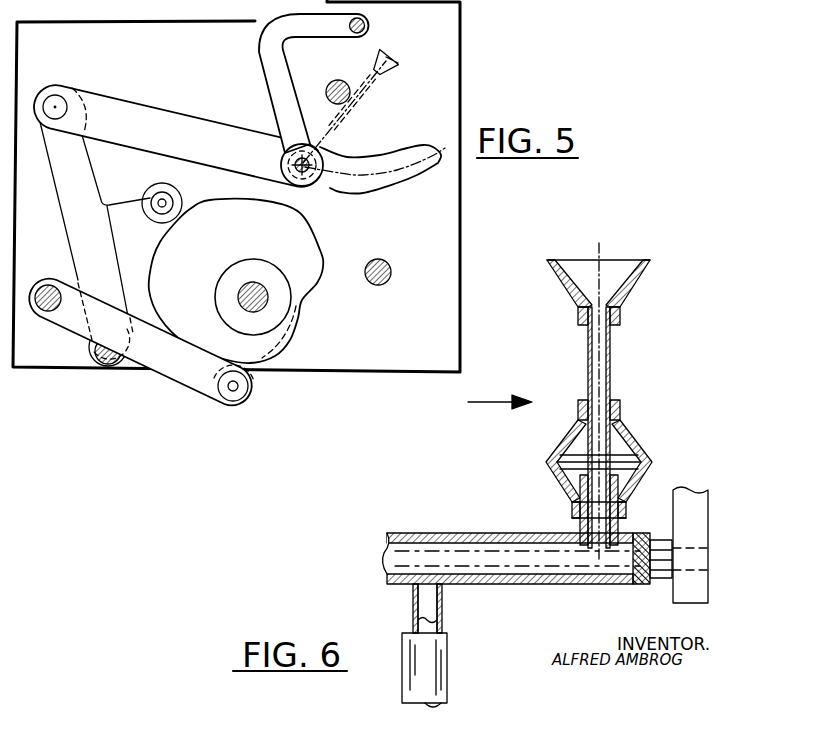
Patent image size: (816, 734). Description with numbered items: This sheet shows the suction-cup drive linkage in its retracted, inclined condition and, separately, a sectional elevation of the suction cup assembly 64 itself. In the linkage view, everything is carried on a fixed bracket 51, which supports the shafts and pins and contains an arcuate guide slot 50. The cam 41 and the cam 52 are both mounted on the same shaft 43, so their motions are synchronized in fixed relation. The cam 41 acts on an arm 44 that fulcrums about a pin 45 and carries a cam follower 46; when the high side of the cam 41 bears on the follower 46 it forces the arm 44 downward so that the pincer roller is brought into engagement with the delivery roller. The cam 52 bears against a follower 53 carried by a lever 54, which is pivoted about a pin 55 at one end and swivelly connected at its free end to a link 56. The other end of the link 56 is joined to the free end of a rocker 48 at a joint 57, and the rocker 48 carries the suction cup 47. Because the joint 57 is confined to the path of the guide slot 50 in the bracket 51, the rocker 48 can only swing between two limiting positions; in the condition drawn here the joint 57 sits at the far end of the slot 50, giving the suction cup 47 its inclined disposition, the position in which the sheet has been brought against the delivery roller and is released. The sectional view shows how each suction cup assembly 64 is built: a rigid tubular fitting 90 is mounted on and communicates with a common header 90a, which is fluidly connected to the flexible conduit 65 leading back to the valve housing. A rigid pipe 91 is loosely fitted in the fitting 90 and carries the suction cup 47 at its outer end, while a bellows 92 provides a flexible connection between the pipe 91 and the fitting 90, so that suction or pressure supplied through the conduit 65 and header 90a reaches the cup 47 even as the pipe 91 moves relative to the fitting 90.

In FIG. 5, the cam 41 is at (211, 313).
In FIG. 5, the shaft 43 is at (248, 283).
In FIG. 5, the arm 44 is at (72, 322).
In FIG. 5, the pin 45 is at (47, 287).
In FIG. 5, the cam follower 46 is at (243, 398).
In FIG. 5, the suction cup 47 is at (398, 74).
In FIG. 6, the suction cup 47 is at (630, 285).
In FIG. 5, the rocker 48 is at (280, 83).
In FIG. 6, the rocker 48 is at (697, 525).
In FIG. 5, the guide slot 50 is at (387, 183).
In FIG. 5, the fixed bracket 51 is at (443, 96).
In FIG. 5, the cam 52 is at (358, 182).
In FIG. 5, the follower 53 is at (182, 203).
In FIG. 5, the lever 54 is at (82, 203).
In FIG. 5, the pin 55 is at (110, 356).
In FIG. 5, the link 56 is at (180, 126).
In FIG. 5, the joint 57 is at (307, 187).
In FIG. 6, the suction cup assembly 64 is at (479, 399).
In FIG. 6, the flexible conduit 65 is at (435, 677).
In FIG. 6, the rigid tubular fitting 90 is at (614, 528).
In FIG. 6, the common header 90a is at (420, 565).
In FIG. 6, the rigid pipe 91 is at (611, 377).
In FIG. 6, the bellows 92 is at (637, 455).